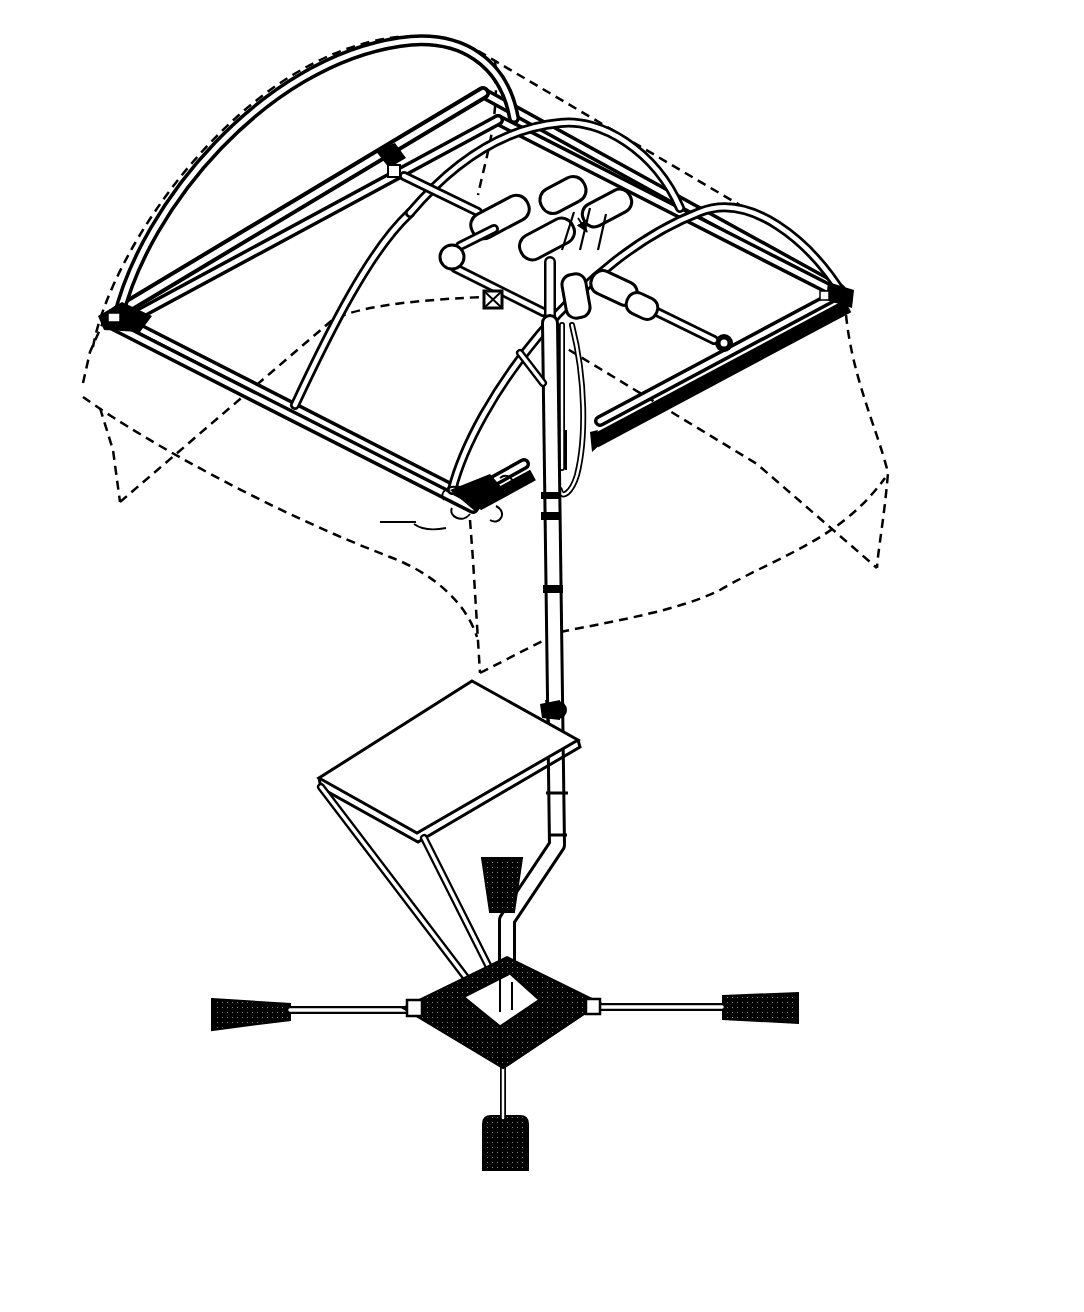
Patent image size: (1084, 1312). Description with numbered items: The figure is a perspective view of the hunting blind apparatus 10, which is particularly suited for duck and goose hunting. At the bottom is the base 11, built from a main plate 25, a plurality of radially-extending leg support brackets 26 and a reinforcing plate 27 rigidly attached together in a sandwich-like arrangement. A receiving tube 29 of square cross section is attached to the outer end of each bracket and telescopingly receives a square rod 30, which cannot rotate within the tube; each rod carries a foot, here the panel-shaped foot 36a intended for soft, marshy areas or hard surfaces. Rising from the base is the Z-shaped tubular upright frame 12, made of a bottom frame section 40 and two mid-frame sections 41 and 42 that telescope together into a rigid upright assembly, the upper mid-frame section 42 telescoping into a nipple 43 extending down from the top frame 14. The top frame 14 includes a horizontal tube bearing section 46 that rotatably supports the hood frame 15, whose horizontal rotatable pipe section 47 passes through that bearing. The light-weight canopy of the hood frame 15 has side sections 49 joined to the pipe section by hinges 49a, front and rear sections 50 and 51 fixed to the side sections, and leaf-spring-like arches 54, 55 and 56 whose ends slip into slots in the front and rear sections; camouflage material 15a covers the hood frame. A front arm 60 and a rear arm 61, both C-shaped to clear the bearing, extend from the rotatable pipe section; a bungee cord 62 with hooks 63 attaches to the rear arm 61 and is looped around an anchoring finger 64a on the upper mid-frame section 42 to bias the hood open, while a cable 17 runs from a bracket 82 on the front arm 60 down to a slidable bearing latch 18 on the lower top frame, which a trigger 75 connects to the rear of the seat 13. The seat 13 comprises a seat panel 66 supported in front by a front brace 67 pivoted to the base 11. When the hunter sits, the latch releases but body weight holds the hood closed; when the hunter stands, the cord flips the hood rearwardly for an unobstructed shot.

The hunting blind apparatus 10 is at (772, 130).
The base 11 is at (392, 1078).
The Z-shaped tubular upright frame 12 is at (597, 792).
The seat 13 is at (332, 752).
The top frame 14 is at (620, 198).
The hood frame 15 is at (668, 190).
The camouflage material 15a is at (132, 254).
The cable 17 is at (522, 385).
The slidable bearing latch 18 is at (567, 708).
The main plate 25 is at (560, 1034).
The leg support brackets 26 is at (549, 993).
The reinforcing plate 27 is at (502, 1016).
The receiving tube 29 is at (414, 1019).
The rods 30 is at (325, 1004).
The foot 36a is at (492, 856).
The bottom frame section 40 is at (567, 833).
The mid-frame section 41 is at (576, 615).
The upper mid-frame section 42 is at (560, 553).
The nipple 43 is at (452, 262).
The horizontal tube bearing section 46 is at (632, 249).
The rotatable pipe section 47 is at (640, 292).
The side sections 49 is at (258, 215).
The hinges 49a is at (386, 176).
The front section 50 is at (290, 420).
The rear section 51 is at (520, 115).
The arch 54 is at (192, 207).
The arch 55 is at (342, 278).
The arch 56 is at (462, 422).
The front arm 60 is at (444, 252).
The rear arm 61 is at (532, 135).
The bungee cord 62 is at (584, 459).
The hooks 63 is at (592, 162).
The anchoring finger 64a is at (576, 484).
The seat panel 66 is at (453, 764).
The front brace 67 is at (386, 868).
The trigger 75 is at (567, 721).
The bracket 82 is at (489, 300).